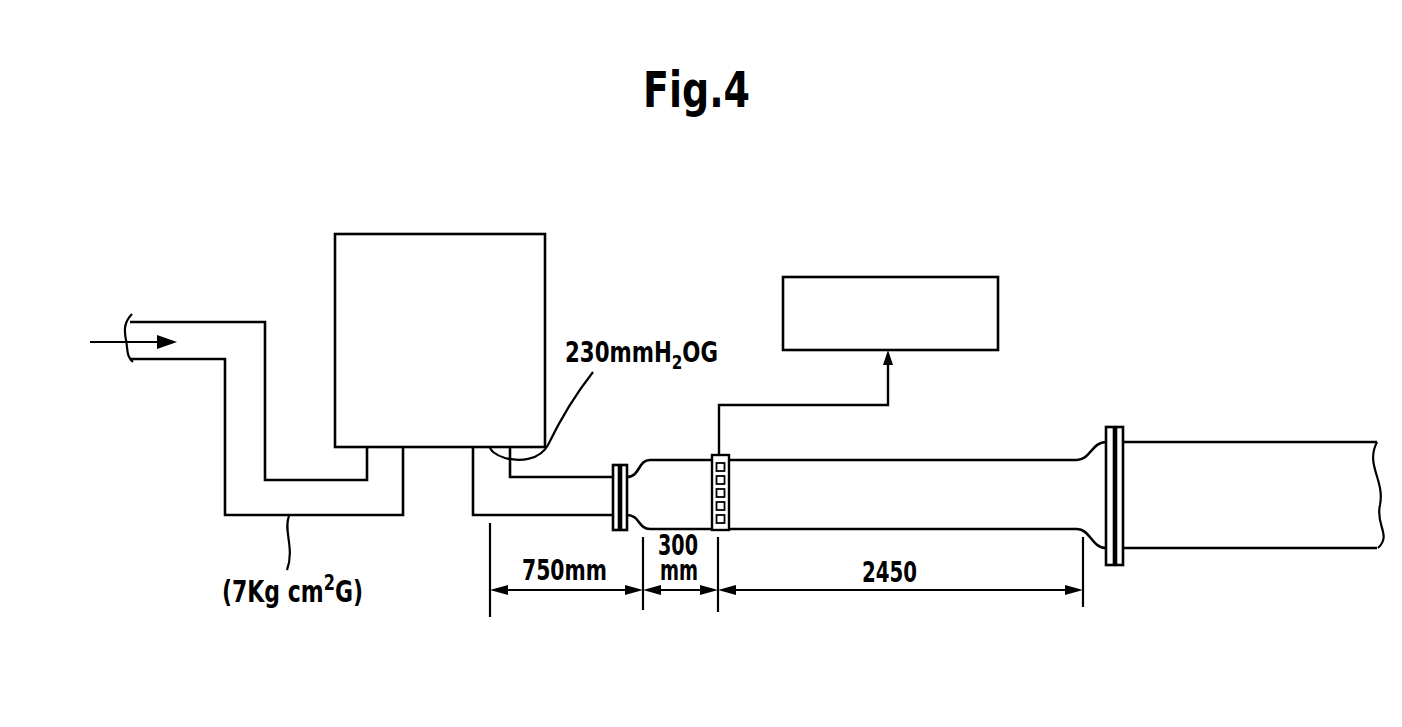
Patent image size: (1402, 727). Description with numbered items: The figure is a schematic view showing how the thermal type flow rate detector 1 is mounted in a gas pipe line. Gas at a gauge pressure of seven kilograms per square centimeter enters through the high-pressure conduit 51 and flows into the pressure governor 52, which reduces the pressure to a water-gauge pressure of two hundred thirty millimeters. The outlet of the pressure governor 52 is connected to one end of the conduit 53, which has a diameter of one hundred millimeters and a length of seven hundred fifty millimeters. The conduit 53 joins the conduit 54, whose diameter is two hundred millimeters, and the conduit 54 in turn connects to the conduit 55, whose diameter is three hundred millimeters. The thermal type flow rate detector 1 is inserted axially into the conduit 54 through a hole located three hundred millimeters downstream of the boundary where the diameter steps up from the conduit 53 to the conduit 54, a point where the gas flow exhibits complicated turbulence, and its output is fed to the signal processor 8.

The thermal type flow rate detector 1 is at (730, 475).
The signal processor 8 is at (942, 277).
The high-pressure conduit 51 is at (218, 321).
The pressure governor 52 is at (520, 234).
The conduit 53 is at (476, 518).
The conduit 54 is at (983, 460).
The conduit 55 is at (1242, 442).